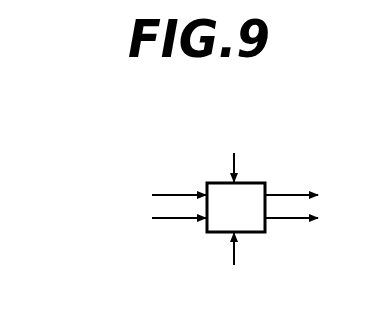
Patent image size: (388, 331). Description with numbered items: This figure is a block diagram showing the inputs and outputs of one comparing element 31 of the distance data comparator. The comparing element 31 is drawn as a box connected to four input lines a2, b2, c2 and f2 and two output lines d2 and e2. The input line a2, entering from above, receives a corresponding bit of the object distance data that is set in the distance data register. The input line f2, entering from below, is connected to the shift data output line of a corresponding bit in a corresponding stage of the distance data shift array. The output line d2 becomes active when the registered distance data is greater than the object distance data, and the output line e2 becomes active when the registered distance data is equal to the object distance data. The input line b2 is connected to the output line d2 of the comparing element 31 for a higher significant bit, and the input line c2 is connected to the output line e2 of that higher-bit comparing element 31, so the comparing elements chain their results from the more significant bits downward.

The comparing element 31 is at (313, 108).
The input line a2 is at (256, 149).
The input line b2 is at (164, 175).
The input line c2 is at (164, 238).
The output line d2 is at (309, 178).
The output line e2 is at (309, 238).
The input line f2 is at (253, 262).